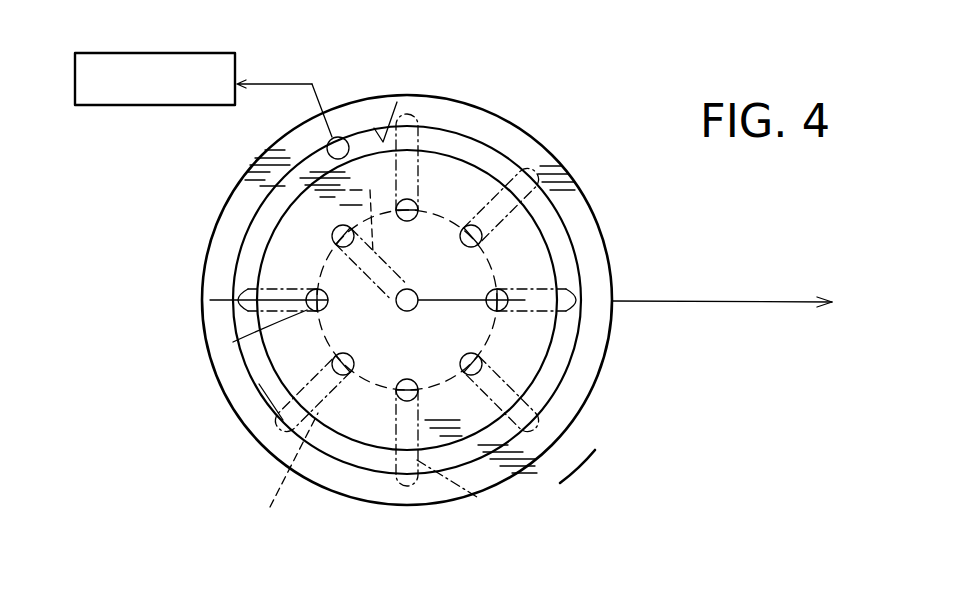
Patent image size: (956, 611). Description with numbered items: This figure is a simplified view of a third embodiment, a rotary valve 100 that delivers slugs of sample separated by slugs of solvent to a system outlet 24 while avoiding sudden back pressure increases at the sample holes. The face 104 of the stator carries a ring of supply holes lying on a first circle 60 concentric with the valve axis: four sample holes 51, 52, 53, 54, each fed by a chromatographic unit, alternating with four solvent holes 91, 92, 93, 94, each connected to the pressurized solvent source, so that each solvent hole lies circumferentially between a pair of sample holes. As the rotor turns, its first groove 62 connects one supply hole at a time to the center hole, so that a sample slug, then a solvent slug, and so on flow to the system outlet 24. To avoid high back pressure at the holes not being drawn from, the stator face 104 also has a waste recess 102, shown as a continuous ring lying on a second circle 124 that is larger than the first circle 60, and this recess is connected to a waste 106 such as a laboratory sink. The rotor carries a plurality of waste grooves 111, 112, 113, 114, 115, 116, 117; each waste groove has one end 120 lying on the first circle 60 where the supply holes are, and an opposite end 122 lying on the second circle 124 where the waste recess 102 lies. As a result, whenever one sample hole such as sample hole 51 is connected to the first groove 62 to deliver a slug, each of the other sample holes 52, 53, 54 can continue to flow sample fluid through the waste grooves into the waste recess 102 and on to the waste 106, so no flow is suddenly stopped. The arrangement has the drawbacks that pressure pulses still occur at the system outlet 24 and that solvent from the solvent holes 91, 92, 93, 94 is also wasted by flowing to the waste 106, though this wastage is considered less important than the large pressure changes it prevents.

The system outlet 24 is at (778, 300).
The sample hole 51 is at (313, 287).
The sample hole 52 is at (332, 358).
The sample hole 53 is at (481, 349).
The sample hole 54 is at (484, 249).
The first circle 60 is at (273, 469).
The first groove 62 is at (370, 190).
The solvent hole 91 is at (332, 242).
The solvent hole 92 is at (395, 398).
The solvent hole 93 is at (500, 308).
The solvent hole 94 is at (421, 207).
The valve 100 is at (628, 358).
The waste recess 102 is at (397, 102).
The face of the stator 104 is at (246, 195).
The waste 106 is at (152, 53).
The waste groove 111 is at (452, 142).
The waste groove 112 is at (247, 340).
The waste groove 113 is at (258, 393).
The waste groove 114 is at (392, 433).
The waste groove 115 is at (566, 397).
The waste groove 116 is at (550, 266).
The waste groove 117 is at (567, 186).
The one end of waste groove 120 is at (505, 425).
The opposite end of waste groove 122 is at (477, 497).
The second circle 124 is at (290, 384).